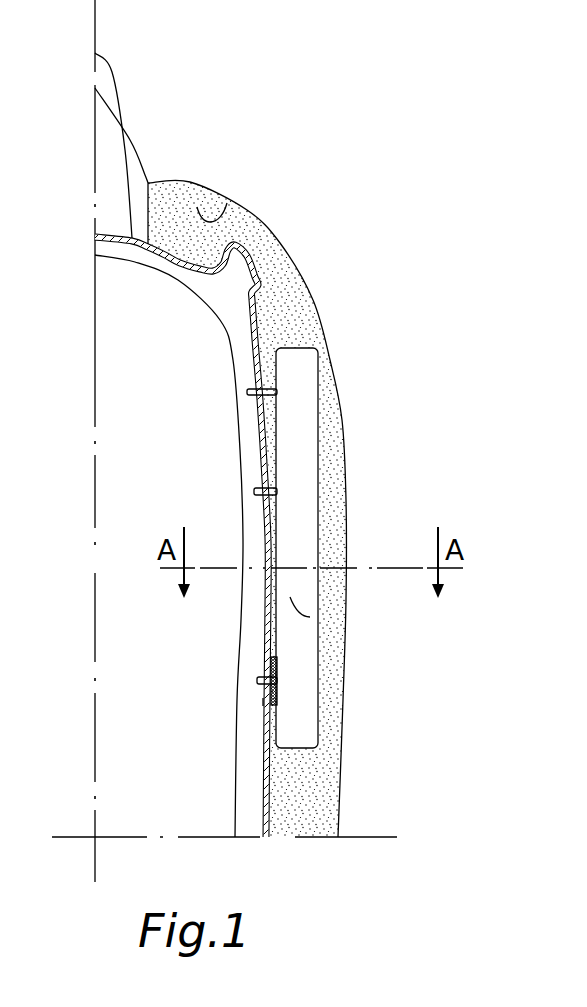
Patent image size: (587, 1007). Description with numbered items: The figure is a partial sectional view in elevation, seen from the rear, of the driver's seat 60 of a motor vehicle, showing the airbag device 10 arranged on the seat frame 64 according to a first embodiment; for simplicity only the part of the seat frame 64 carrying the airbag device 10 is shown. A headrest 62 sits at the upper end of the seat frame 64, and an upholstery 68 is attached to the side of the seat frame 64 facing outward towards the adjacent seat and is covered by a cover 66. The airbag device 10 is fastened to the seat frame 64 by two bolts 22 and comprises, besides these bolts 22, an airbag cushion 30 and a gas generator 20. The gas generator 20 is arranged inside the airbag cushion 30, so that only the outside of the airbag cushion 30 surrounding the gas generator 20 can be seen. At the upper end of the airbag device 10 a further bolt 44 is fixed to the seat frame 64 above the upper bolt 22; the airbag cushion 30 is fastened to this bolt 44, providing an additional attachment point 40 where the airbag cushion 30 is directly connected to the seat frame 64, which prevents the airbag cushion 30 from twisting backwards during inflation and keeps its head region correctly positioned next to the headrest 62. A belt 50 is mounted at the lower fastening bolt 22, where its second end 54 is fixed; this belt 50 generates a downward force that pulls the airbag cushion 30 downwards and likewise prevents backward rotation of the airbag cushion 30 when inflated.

The airbag device 10 is at (364, 358).
The gas generator 20 is at (393, 603).
The bolts 22 is at (257, 489).
The airbag cushion 30 is at (380, 448).
The additional attachment point 40 is at (244, 373).
The bolt 44 is at (257, 391).
The belt 50 is at (280, 692).
The second end 54 is at (264, 702).
The driver's seat 60 is at (289, 191).
The headrest 62 is at (113, 100).
The seat frame 64 is at (236, 308).
The cover 66 is at (270, 225).
The upholstery 68 is at (245, 145).